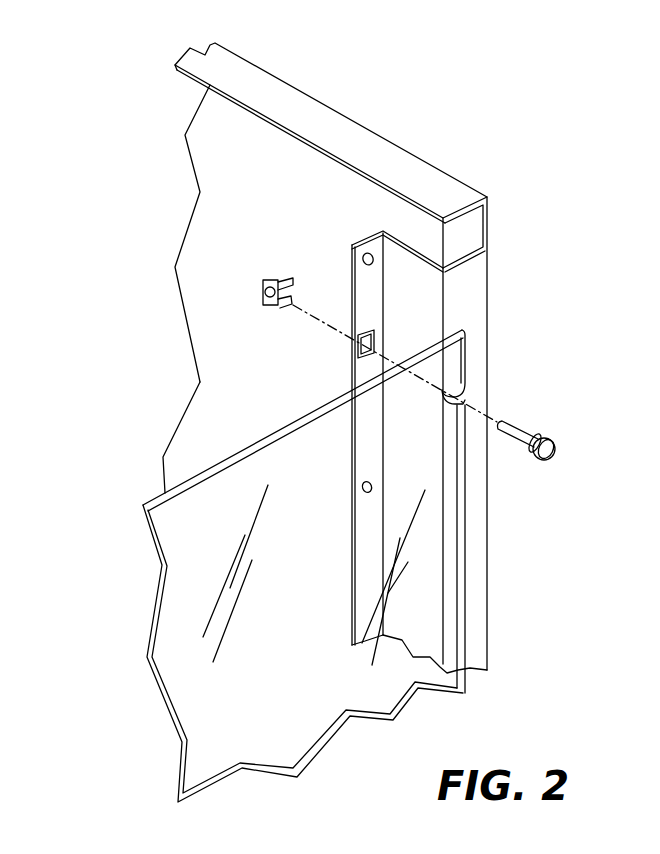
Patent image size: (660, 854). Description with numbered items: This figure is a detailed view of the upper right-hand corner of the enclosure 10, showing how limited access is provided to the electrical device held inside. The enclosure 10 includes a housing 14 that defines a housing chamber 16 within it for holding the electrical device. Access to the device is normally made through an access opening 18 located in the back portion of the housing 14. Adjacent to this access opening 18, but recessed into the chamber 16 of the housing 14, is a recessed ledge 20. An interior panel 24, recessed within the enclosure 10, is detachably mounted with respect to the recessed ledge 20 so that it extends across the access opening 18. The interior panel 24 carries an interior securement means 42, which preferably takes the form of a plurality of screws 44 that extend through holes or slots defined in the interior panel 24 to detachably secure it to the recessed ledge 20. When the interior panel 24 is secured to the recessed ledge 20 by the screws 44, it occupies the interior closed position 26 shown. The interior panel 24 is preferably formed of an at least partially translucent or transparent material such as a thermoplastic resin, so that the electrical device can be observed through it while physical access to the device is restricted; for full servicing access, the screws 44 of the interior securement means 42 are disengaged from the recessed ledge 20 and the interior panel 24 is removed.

The enclosure 10 is at (437, 166).
The housing 14 is at (483, 624).
The housing chamber 16 is at (210, 395).
The access opening 18 is at (218, 286).
The recessed ledge 20 is at (361, 285).
The interior panel 24 is at (155, 495).
The interior closed position 26 is at (465, 362).
The interior securement means 42 is at (555, 442).
The screws 44 is at (540, 460).